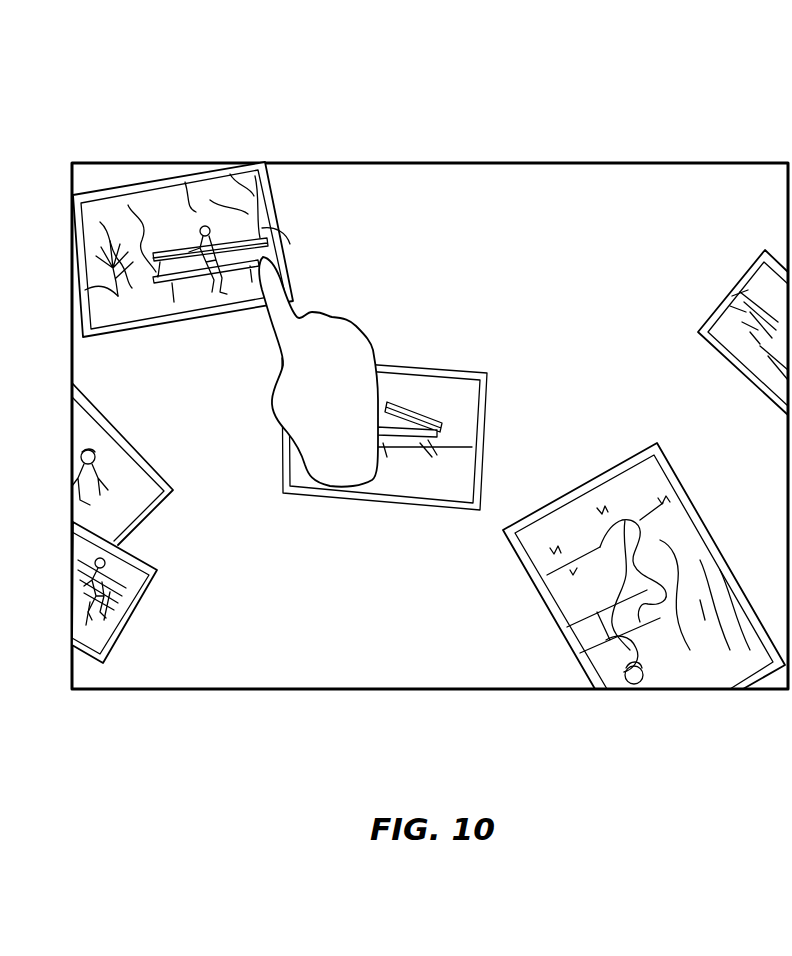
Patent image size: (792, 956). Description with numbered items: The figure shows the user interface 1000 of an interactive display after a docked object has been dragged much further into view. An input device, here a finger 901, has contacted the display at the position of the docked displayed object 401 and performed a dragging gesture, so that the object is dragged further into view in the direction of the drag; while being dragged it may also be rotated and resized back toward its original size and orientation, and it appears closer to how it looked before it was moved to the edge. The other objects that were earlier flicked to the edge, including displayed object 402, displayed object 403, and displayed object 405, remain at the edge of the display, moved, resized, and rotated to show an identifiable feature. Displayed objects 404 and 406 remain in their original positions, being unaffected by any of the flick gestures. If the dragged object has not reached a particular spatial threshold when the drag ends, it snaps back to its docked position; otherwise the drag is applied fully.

The user interface 1000 is at (456, 86).
The displayed object 401 is at (293, 240).
The displayed object 402 is at (148, 523).
The photo of person on bench 403 is at (132, 617).
The displayed object 404 is at (380, 507).
The displayed object 405 is at (728, 297).
The displayed object 406 is at (553, 620).
The finger 901 is at (353, 358).